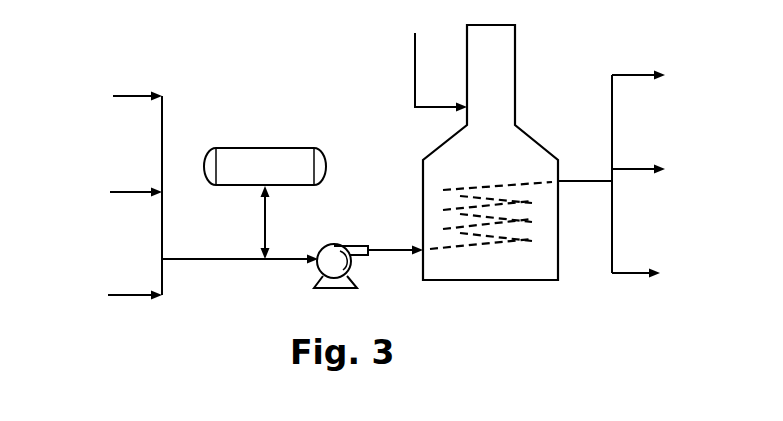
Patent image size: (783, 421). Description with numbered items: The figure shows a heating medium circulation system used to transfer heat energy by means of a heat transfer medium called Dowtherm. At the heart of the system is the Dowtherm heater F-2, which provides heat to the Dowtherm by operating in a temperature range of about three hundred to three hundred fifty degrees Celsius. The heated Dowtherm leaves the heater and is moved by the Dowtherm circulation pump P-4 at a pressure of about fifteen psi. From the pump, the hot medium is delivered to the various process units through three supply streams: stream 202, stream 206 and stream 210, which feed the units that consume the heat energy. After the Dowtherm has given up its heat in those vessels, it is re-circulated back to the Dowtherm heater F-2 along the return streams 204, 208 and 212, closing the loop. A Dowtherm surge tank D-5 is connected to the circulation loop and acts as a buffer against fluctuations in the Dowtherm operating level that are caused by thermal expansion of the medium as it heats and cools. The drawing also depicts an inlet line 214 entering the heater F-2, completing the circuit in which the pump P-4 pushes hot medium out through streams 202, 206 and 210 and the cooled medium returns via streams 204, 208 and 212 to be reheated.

The stream 202 is at (106, 90).
The stream 206 is at (118, 180).
The stream 210 is at (118, 285).
The inlet stream to flash vessel 214 is at (402, 75).
The return stream 204 is at (638, 63).
The return stream 208 is at (662, 163).
The return stream 212 is at (660, 260).
The Dowtherm surge tank D-5 is at (267, 133).
The Dowtherm circulation pump P-4 is at (339, 233).
The Dowtherm heater F-2 is at (518, 120).